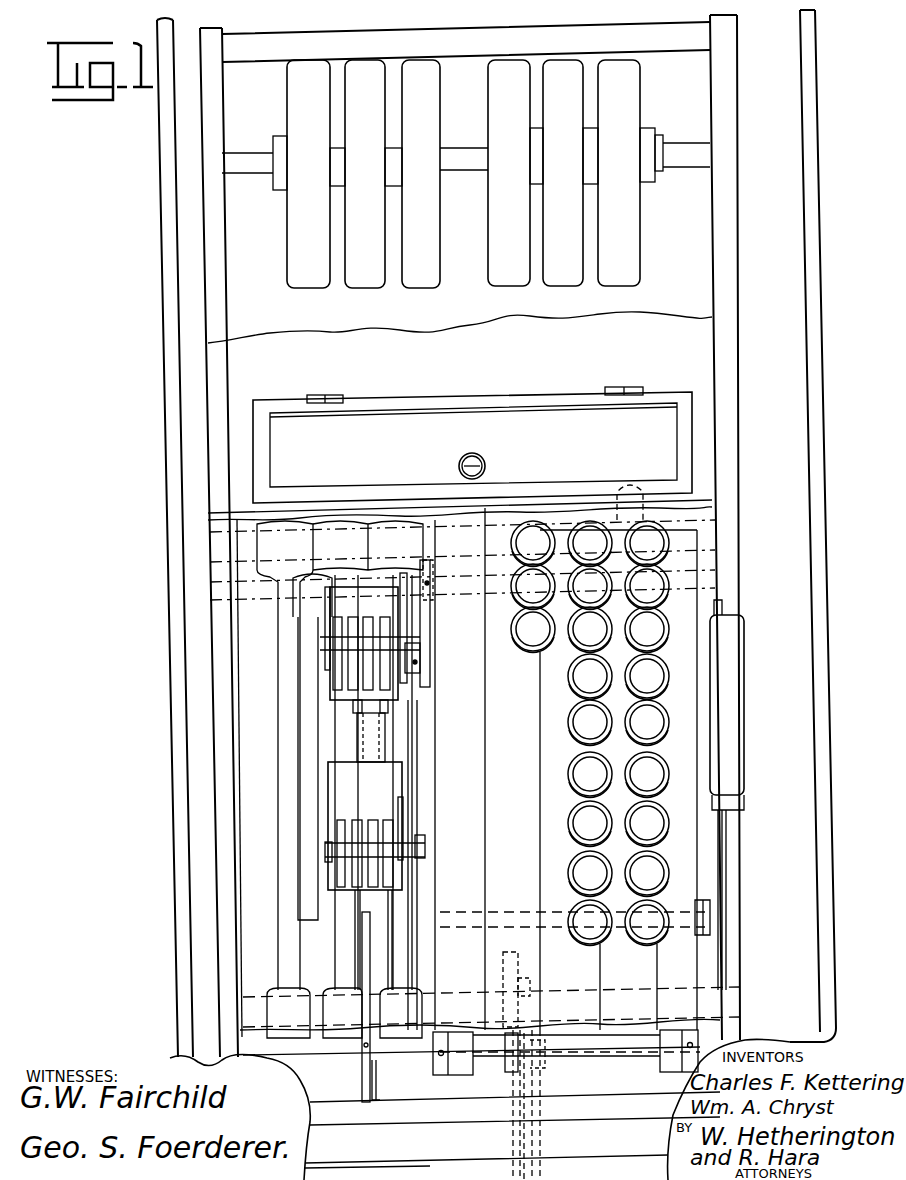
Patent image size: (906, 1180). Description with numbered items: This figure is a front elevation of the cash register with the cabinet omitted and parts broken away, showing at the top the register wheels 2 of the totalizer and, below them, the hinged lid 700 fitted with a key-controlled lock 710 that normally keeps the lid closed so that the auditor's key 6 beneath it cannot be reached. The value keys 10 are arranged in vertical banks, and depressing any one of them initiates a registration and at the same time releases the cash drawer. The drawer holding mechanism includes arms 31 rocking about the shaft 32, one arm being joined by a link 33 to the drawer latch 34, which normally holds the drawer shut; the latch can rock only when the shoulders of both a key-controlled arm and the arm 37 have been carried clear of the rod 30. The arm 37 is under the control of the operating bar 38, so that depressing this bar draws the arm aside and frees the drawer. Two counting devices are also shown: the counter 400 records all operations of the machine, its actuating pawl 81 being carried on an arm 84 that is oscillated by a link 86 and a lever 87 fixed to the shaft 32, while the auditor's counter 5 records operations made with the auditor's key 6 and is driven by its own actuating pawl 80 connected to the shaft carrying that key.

The register (totalizer) wheels 2 is at (643, 253).
The auditor's counter 5 is at (328, 630).
The auditor's key 6 is at (620, 483).
The value keys 10 is at (650, 630).
The rod 30 is at (688, 907).
The arms 31 is at (512, 960).
The shaft 32 is at (627, 1050).
The link 33 is at (520, 1002).
The drawer latch 34 is at (530, 1113).
The arm 37 is at (718, 862).
The operating bar 38 is at (732, 747).
The actuating pawl 80 is at (390, 697).
The actuating pawl 81 is at (377, 897).
The arm 84 is at (365, 958).
The link 86 is at (372, 1079).
The lever 87 is at (378, 1096).
The counter 400 is at (345, 845).
The hinged lid 700 is at (395, 450).
The key-controlled lock 710 is at (485, 460).